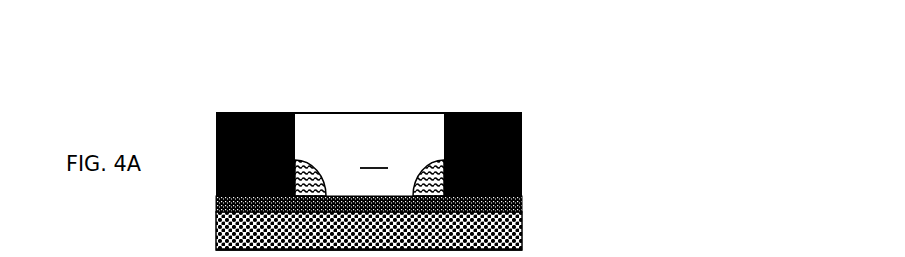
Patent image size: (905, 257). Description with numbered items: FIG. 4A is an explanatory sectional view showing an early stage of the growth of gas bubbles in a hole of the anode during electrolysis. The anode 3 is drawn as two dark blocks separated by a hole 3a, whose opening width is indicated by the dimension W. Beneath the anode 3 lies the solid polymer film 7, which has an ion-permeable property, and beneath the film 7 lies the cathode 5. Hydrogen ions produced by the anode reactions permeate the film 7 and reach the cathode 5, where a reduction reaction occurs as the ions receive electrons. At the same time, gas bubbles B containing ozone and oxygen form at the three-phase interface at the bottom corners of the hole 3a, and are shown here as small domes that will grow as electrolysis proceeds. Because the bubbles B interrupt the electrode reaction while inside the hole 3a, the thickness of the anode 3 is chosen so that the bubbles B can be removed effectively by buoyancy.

The anode 3 is at (514, 141).
The hole 3a is at (440, 120).
The cathode 5 is at (487, 228).
The solid polymer film 7 is at (514, 190).
The gas bubble B is at (308, 167).
The width of opening W is at (374, 155).